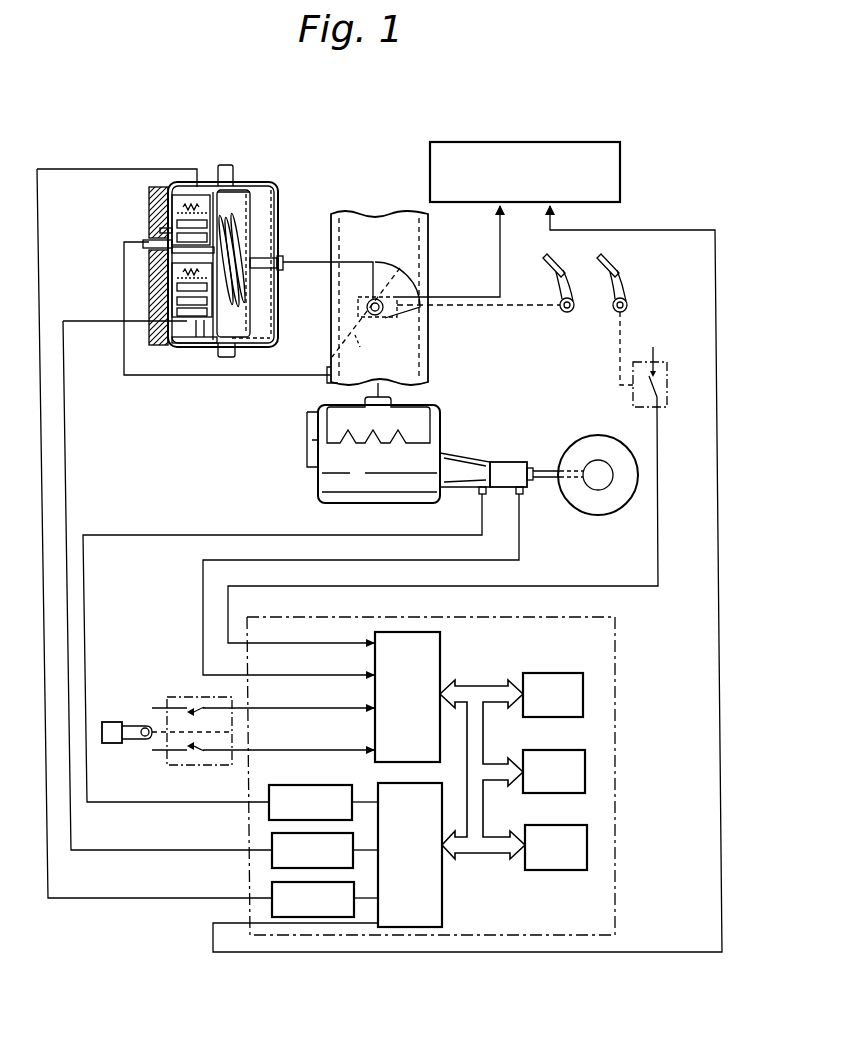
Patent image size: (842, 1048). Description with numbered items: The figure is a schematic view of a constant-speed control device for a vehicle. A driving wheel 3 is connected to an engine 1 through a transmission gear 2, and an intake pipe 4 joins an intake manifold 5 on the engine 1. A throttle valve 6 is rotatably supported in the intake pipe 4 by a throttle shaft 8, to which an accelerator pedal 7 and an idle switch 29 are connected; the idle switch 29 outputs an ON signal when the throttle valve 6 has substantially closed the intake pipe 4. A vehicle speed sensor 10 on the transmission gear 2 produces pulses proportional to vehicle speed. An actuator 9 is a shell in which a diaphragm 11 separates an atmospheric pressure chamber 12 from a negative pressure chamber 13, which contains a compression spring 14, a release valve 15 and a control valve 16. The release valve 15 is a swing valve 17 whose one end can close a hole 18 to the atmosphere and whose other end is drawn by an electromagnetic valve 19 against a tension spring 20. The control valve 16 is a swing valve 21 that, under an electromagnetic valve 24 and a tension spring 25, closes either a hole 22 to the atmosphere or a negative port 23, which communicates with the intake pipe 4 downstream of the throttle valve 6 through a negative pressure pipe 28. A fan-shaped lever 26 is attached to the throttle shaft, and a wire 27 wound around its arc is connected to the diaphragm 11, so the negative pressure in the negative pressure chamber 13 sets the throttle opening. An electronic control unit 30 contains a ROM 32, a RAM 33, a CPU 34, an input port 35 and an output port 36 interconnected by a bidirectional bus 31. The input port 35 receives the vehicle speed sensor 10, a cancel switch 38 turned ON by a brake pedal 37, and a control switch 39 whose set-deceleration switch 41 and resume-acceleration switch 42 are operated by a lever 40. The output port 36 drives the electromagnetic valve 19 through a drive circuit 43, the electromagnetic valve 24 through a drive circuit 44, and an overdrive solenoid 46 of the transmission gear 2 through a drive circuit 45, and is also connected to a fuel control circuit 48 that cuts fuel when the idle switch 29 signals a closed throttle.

The engine 1 is at (442, 418).
The transmission gear 2 is at (470, 462).
The driving wheel 3 is at (581, 438).
The intake pipe 4 is at (430, 228).
The intake manifold 5 is at (340, 408).
The throttle valve 6 is at (328, 353).
The accelerator pedal 7 is at (560, 268).
The throttle shaft 8 is at (396, 318).
The actuator 9 is at (278, 180).
The vehicle speed sensor 10 is at (522, 497).
The diaphragm 11 is at (262, 214).
The atmospheric pressure chamber 12 is at (268, 330).
The negative pressure chamber 13 is at (236, 206).
The compression spring 14 is at (213, 348).
The release valve 15 is at (178, 346).
The control valve 16 is at (196, 256).
The swing valve 17 is at (180, 302).
The hole 18 is at (143, 244).
The electromagnetic valve 19 is at (205, 341).
The tension spring 20 is at (172, 284).
The swing valve 21 is at (150, 205).
The hole 22 is at (150, 196).
The negative port 23 is at (160, 230).
The electromagnetic valve 24 is at (216, 212).
The tension spring 25 is at (190, 206).
The lever 26 is at (418, 280).
The wire 27 is at (303, 264).
The negative pressure pipe 28 is at (247, 376).
The idle switch 29 is at (400, 342).
The electronic control unit 30 is at (620, 708).
The bidirectional bus 31 is at (493, 688).
The read only memory (ROM) 32 is at (566, 673).
The random access memory (RAM) 33 is at (562, 750).
The central processing unit (CPU) 34 is at (566, 825).
The input port 35 is at (441, 636).
The output port 36 is at (443, 900).
The brake pedal 37 is at (621, 280).
The cancel switch 38 is at (668, 398).
The control switch 39 is at (166, 700).
The lever 40 is at (113, 745).
The set-deceleration switch 41 is at (193, 707).
The resume-acceleration switch 42 is at (192, 766).
The drive circuit 43 is at (272, 841).
The drive circuit 44 is at (272, 891).
The drive circuit 45 is at (292, 784).
The overdrive solenoid 46 is at (480, 497).
The fuel control circuit 48 is at (622, 168).